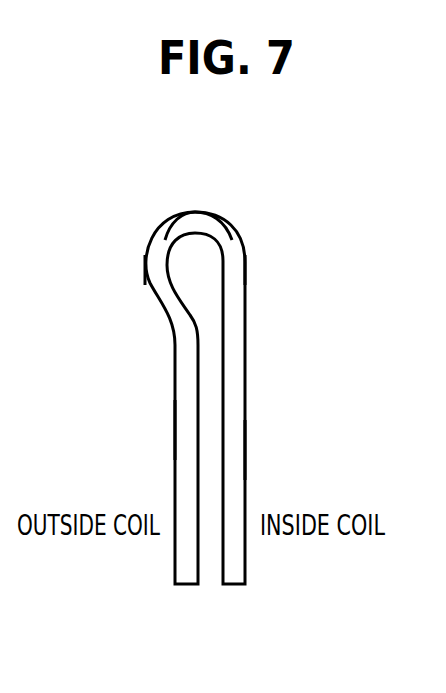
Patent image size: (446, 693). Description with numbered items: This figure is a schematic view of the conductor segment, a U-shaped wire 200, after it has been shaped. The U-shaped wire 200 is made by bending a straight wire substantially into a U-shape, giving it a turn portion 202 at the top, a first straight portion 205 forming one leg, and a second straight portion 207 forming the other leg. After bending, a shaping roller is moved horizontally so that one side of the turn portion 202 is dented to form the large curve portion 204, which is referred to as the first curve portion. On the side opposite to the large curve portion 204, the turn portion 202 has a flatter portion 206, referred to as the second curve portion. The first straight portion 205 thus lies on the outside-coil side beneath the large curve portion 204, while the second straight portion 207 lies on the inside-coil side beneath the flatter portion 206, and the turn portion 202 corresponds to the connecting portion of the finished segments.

The U-shaped wire 200 is at (298, 178).
The turn portion 202 is at (196, 219).
The large curve portion 204 is at (138, 257).
The flatter portion 206 is at (253, 257).
The first straight portion 205 is at (186, 427).
The second straight portion 207 is at (237, 447).